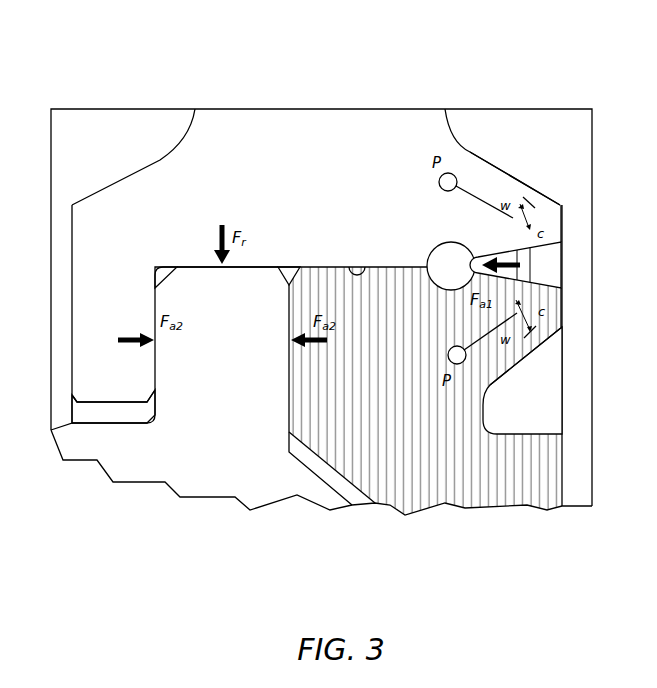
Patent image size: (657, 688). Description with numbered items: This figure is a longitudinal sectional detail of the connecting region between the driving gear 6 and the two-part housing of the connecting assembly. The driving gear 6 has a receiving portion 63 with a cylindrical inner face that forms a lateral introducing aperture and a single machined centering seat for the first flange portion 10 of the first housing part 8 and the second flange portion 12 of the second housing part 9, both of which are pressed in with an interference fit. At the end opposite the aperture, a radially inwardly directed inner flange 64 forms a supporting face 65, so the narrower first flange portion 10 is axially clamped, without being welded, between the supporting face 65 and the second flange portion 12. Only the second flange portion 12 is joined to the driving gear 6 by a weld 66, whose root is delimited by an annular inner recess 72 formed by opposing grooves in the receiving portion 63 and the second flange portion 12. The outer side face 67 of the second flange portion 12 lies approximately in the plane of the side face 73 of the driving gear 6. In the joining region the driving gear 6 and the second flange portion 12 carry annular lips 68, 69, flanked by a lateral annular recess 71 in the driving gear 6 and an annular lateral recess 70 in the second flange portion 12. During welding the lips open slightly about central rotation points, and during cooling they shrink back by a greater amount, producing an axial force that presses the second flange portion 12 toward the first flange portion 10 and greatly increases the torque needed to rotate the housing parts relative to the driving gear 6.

The driving gear 6 is at (297, 133).
The first cup-shaped housing part 8 is at (205, 482).
The second cup-shaped housing part 9 is at (470, 490).
The first flange portion 10 is at (227, 321).
The second flange portion 12 is at (420, 391).
The receiving portion 63 is at (368, 268).
The inner flange 64 is at (112, 383).
The supporting face 65 is at (155, 365).
The weld 66 is at (550, 273).
The outer side face 67 is at (560, 328).
The annular lip 68 is at (548, 213).
The annular lip 69 is at (548, 303).
The annular lateral recess 70 is at (548, 410).
The lateral annular recess 71 is at (548, 135).
The annular inner recess 72 is at (427, 287).
The side face 73 is at (556, 230).